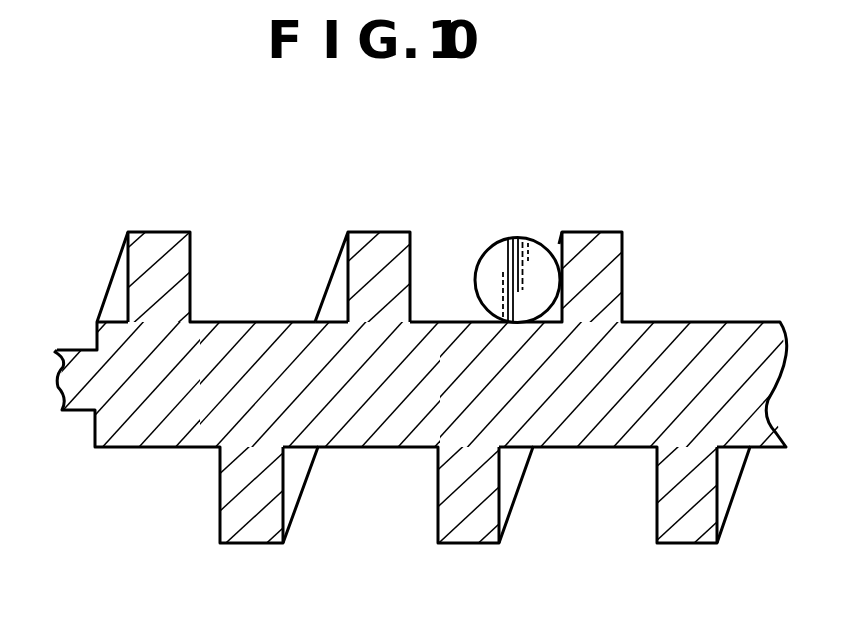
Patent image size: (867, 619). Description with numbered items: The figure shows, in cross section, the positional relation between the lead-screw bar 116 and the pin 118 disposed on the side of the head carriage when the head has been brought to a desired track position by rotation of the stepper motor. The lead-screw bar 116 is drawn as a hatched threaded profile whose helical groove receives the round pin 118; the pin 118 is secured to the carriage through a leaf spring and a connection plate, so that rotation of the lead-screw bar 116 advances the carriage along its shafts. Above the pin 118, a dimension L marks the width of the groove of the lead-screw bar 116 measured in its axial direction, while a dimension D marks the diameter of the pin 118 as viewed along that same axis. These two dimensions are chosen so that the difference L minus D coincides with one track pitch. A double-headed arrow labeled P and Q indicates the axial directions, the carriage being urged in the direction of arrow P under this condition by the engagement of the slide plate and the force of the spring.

The lead-screw bar 116 is at (367, 264).
The pin 118 is at (493, 268).
The width of the groove L is at (562, 222).
The diameter of the pin D is at (562, 201).
The direction of arrow P is at (302, 154).
The direction Q is at (290, 153).